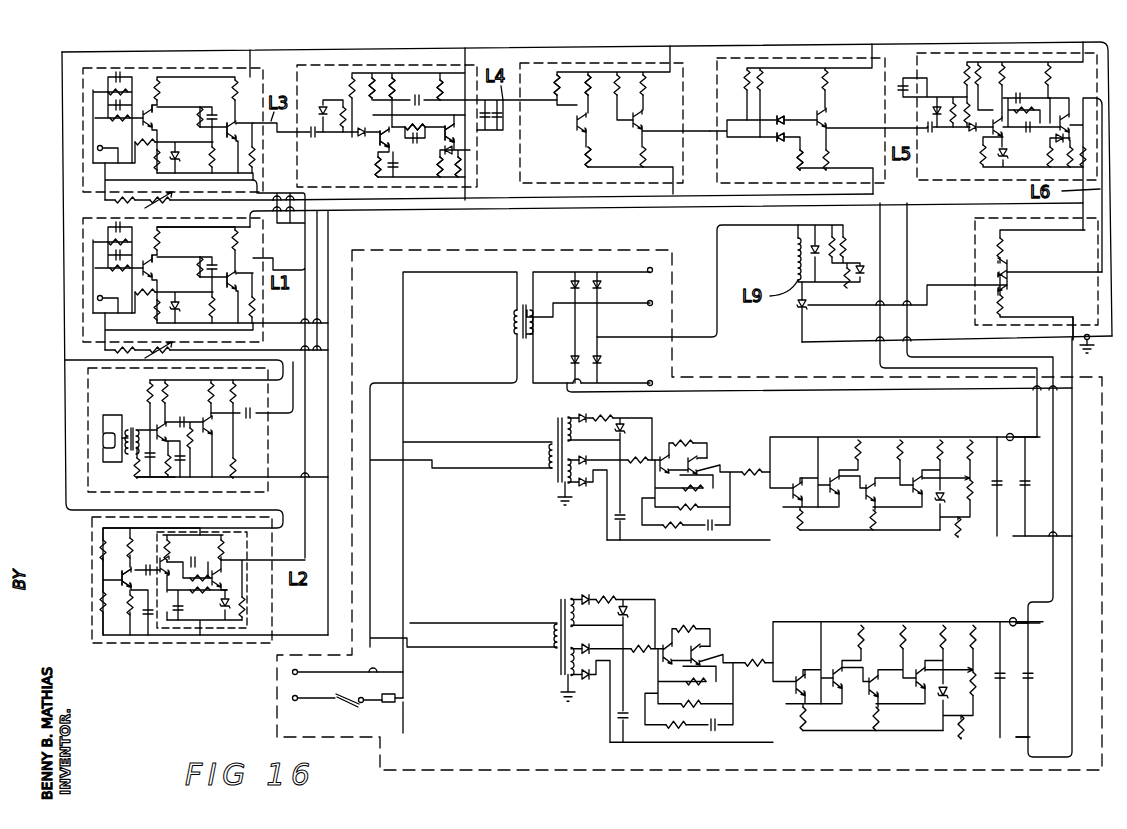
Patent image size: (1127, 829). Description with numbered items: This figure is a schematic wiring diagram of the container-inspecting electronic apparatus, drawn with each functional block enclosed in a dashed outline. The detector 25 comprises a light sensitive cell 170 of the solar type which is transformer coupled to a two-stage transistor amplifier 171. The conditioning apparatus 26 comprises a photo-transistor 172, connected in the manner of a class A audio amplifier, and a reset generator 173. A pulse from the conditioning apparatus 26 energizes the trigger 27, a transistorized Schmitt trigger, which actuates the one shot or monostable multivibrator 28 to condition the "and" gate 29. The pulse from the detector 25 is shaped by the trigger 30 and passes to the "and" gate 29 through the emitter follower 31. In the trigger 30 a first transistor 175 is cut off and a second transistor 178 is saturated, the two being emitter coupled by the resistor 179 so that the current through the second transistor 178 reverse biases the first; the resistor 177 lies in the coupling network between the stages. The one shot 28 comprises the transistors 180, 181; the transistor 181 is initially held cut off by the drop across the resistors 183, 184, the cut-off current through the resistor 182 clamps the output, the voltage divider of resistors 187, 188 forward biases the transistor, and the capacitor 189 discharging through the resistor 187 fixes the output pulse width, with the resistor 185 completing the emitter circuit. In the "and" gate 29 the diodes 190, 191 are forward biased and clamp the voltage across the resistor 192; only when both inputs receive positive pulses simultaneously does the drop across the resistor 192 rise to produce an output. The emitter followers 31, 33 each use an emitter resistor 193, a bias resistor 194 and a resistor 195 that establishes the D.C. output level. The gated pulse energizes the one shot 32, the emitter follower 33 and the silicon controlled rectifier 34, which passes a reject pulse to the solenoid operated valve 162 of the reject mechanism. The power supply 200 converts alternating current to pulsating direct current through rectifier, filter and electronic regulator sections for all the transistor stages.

The detector 25 is at (97, 471).
The conditioning apparatus 26 is at (118, 643).
The trigger 27 is at (143, 73).
The one shot or monostable multivibrator 28 is at (335, 78).
The "and" gate 29 is at (737, 68).
The trigger 30 is at (90, 304).
The emitter follower 31 is at (543, 77).
The one shot or monostable multivibrator 32 is at (950, 61).
The emitter follower 33 is at (985, 244).
The silicon controlled rectifier 34 is at (792, 309).
The solenoid operated valve 162 is at (797, 258).
The cell 170 is at (97, 441).
The two-stage transistor amplifier 171 is at (170, 481).
The photo-transistor 172 is at (125, 592).
The reset generator 173 is at (163, 628).
The transistor 175 is at (188, 112).
The resistor 177 is at (204, 122).
The transistor 178 is at (234, 140).
The resistor 179 is at (158, 162).
The transistor 180 is at (375, 141).
The transistor 181 is at (466, 135).
The resistor 182 is at (476, 159).
The resistor 183 is at (392, 87).
The resistor 184 is at (419, 123).
The resistor 185 is at (440, 165).
The resistor 187 is at (373, 83).
The resistor 188 is at (378, 162).
The capacitor 189 is at (427, 89).
The diode 190 is at (782, 115).
The diode 191 is at (780, 142).
The resistor 192 is at (800, 162).
The emitter resistor 193 is at (591, 147).
The resistor 194 is at (557, 85).
The resistor 195 is at (588, 82).
The power supply 200 is at (527, 760).